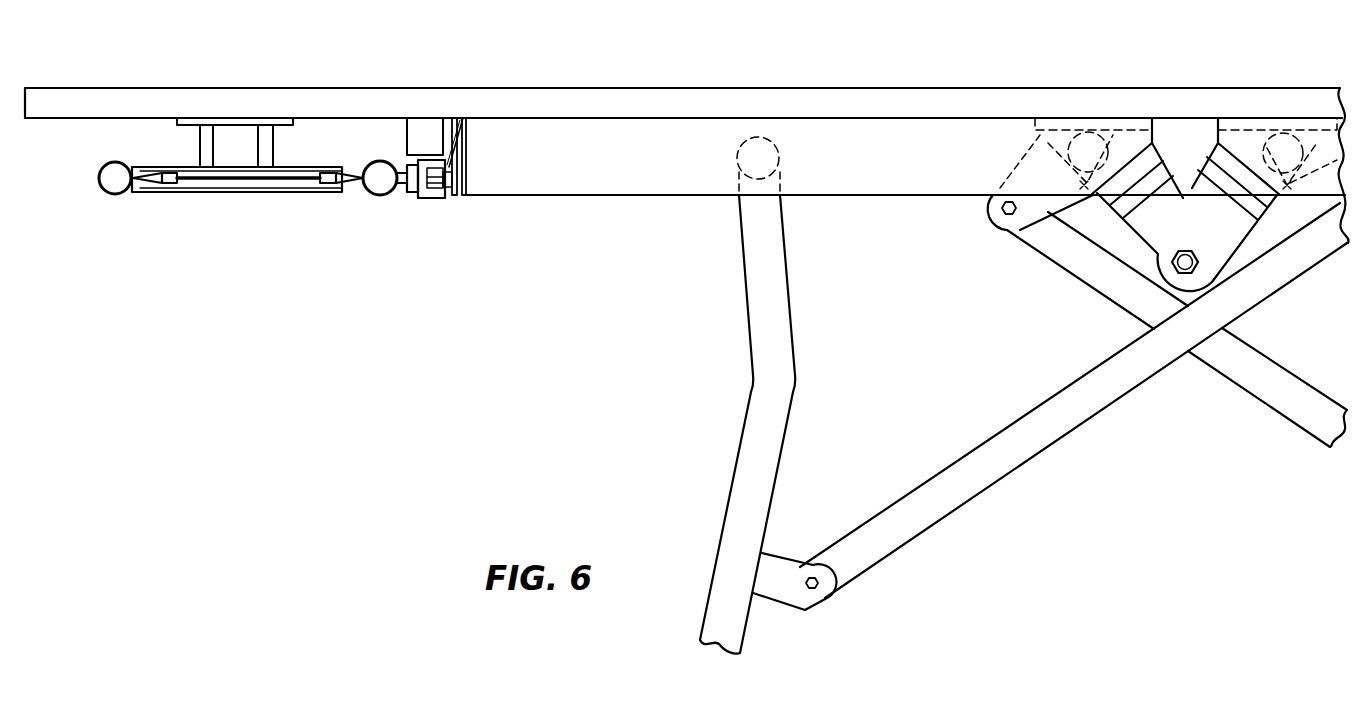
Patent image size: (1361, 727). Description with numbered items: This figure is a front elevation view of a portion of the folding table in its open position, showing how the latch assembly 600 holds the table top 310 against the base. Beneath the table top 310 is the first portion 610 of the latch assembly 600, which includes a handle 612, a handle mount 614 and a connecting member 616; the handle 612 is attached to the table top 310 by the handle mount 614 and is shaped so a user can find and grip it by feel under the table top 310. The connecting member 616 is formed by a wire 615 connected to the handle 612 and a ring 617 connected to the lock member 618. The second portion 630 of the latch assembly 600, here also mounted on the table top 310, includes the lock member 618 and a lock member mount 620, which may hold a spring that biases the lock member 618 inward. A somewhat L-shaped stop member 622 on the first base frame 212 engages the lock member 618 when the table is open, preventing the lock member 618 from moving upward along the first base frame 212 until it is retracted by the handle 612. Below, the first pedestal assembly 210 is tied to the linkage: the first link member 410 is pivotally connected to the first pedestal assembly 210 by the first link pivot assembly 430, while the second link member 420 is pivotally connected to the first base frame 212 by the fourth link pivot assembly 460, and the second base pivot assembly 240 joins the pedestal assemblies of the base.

The table top 310 is at (552, 100).
The first base frame 212 is at (597, 172).
The handle mount 614 is at (188, 172).
The wire 615 is at (300, 172).
The first portion 610 is at (183, 196).
The handle 612 is at (100, 192).
The connecting member 616 is at (362, 186).
The ring 617 is at (389, 161).
The lock member mount 620 is at (445, 190).
The second portion 630 is at (423, 208).
The lock member 618 is at (464, 182).
The stop member 622 is at (466, 160).
The latch assembly 600 is at (237, 223).
The first pedestal assembly 210 is at (718, 517).
The first link pivot assembly 430 is at (820, 594).
The first link member 410 is at (1046, 432).
The second link member 420 is at (1270, 390).
The fourth link pivot assembly 460 is at (1003, 217).
The second base pivot assembly 240 is at (1186, 250).